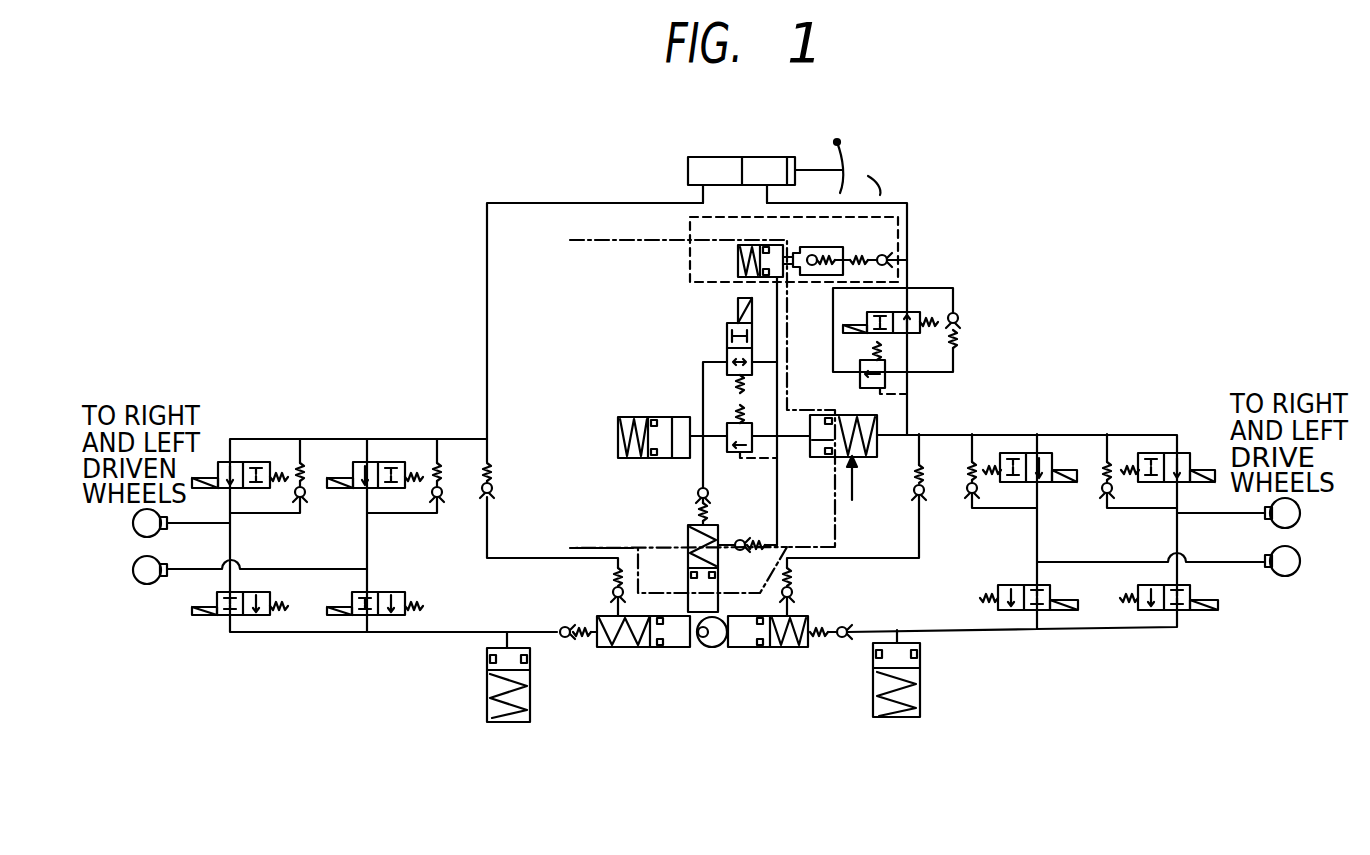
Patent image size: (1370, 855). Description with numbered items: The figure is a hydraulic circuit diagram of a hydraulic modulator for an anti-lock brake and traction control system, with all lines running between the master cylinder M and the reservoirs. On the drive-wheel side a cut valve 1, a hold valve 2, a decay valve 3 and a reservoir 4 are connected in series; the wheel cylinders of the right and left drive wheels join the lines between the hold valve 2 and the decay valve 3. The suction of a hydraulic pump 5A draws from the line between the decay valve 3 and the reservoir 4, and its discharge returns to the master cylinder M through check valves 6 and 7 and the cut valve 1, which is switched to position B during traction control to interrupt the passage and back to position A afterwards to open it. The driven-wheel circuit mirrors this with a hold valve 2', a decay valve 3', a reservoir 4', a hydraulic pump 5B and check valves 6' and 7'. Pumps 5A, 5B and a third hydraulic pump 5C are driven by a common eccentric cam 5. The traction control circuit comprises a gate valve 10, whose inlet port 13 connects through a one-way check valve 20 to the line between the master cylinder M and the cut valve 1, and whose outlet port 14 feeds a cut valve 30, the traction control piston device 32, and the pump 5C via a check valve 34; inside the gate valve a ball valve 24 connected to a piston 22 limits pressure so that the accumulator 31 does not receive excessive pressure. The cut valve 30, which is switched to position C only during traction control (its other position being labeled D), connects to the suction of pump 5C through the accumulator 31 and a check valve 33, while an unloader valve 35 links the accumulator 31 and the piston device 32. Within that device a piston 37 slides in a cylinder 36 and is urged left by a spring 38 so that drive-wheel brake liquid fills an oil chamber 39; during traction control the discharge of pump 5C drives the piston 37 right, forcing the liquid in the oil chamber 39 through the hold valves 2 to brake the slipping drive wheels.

The cut valve 1 is at (955, 309).
The hold valve 2 is at (1090, 438).
The hold valve 2' is at (318, 440).
The decay valve 3 is at (1099, 636).
The decay valve 3' is at (307, 642).
The reservoir 4 is at (919, 686).
The reservoir 4' is at (533, 689).
The eccentric cam 5 is at (711, 647).
The hydraulic pump 5A is at (750, 647).
The hydraulic pump 5B is at (672, 647).
The hydraulic pump 5C is at (690, 588).
The check valve 6 is at (810, 589).
The check valve 6' is at (588, 588).
The check valve 7 is at (934, 501).
The check valve 7' is at (513, 475).
The gate valve 10 is at (873, 213).
The inlet port 13 is at (903, 263).
The outlet port 14 is at (777, 283).
The one-way check valve 20 is at (887, 256).
The piston 22 is at (760, 250).
The ball valve 24 is at (817, 253).
The cut valve 30 is at (717, 345).
The accumulator 31 is at (643, 414).
The traction control piston device 32 is at (828, 528).
The check valve 33 is at (697, 491).
The check valve 34 is at (736, 538).
The unloader valve 35 is at (752, 427).
The cylinder 36 is at (880, 410).
The piston 37 is at (813, 443).
The spring 38 is at (877, 423).
The oil chamber 39 is at (870, 470).
The position A is at (933, 290).
The position B is at (890, 305).
The position C is at (753, 336).
The valve position D is at (754, 370).
The master cylinder M is at (700, 168).